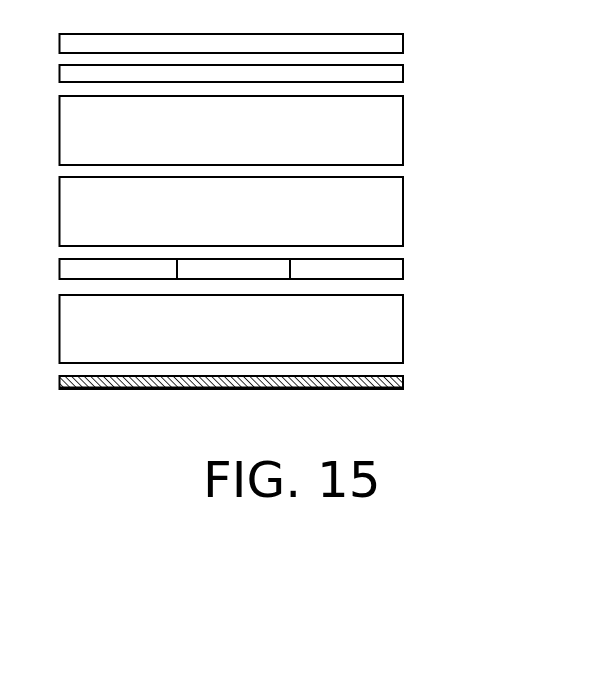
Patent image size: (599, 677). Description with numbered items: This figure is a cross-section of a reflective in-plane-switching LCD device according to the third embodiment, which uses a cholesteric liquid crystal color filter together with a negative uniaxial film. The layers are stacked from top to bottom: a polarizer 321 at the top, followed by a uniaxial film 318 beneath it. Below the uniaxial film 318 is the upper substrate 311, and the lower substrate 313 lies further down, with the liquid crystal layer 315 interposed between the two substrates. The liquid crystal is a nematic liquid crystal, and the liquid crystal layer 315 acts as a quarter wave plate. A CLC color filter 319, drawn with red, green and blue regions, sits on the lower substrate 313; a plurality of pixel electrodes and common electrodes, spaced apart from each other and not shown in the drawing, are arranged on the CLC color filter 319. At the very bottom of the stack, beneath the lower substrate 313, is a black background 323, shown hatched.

The polarizer 321 is at (402, 45).
The uniaxial film 318 is at (402, 74).
The upper substrate 311 is at (402, 133).
The liquid crystal layer 315 is at (402, 218).
The CLC color filter 319 is at (402, 269).
The lower substrate 313 is at (402, 328).
The black background 323 is at (402, 382).